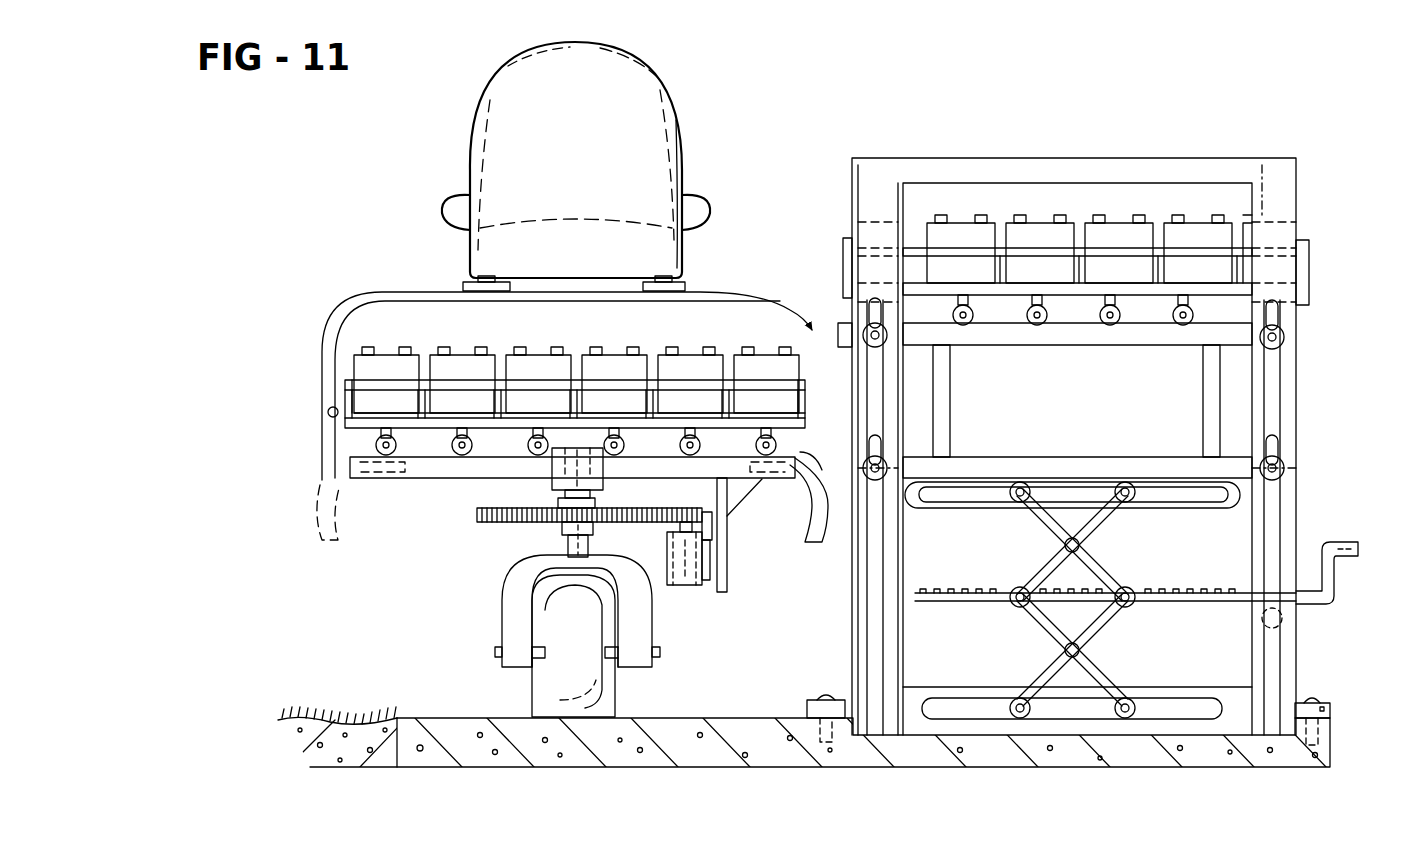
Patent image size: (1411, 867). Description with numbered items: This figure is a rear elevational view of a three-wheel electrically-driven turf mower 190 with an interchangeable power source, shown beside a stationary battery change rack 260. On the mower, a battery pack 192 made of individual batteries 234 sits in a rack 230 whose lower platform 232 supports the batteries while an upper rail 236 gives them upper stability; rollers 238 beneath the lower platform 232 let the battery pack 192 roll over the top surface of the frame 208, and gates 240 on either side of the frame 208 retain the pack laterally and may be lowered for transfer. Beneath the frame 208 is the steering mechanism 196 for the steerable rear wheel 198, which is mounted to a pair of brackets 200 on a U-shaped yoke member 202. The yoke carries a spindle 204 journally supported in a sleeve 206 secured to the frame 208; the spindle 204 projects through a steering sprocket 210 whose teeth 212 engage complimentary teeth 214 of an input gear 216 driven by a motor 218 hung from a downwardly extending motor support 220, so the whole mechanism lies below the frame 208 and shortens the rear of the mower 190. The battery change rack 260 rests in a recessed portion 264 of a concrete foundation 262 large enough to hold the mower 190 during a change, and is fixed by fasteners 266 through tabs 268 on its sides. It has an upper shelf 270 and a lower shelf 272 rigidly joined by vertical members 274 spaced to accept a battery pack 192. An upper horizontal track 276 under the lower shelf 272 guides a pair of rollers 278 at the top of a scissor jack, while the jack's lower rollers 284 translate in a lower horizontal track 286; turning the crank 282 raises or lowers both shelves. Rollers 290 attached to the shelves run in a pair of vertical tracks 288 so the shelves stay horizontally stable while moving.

The turf mower 190 is at (300, 328).
The battery pack 192 is at (455, 352).
The steering mechanism 196 is at (403, 573).
The steerable rear wheel 198 is at (617, 710).
The brackets 200 is at (520, 660).
The U-shaped yoke member 202 is at (500, 638).
The spindle 204 is at (562, 526).
The sleeve 206 is at (550, 486).
The frame 208 is at (415, 473).
The steering sprocket 210 is at (603, 525).
The teeth 212 is at (478, 514).
The complimentary teeth 214 is at (712, 522).
The input gear 216 is at (690, 507).
The motor 218 is at (687, 583).
The motor support 220 is at (722, 557).
The rack 230 is at (728, 378).
The lower platform 232 is at (372, 415).
The individual batteries 234 is at (615, 370).
The upper rail 236 is at (425, 392).
The rollers 238 is at (372, 443).
The gates 240 is at (326, 408).
The battery change rack 260 is at (1305, 187).
The foundation 262 is at (606, 742).
The recessed portion 264 is at (897, 740).
The fasteners 266 is at (825, 698).
The tabs 268 is at (1332, 713).
The upper shelf 270 is at (1012, 345).
The lower shelf 272 is at (1105, 460).
The vertical members 274 is at (947, 400).
The upper horizontal track 276 is at (925, 508).
The rollers 278 is at (1127, 502).
The crank 282 is at (1326, 570).
The rollers 284 is at (1012, 700).
The lower horizontal track 286 is at (940, 705).
The vertical tracks 288 is at (1290, 420).
The rollers 290 is at (1285, 337).